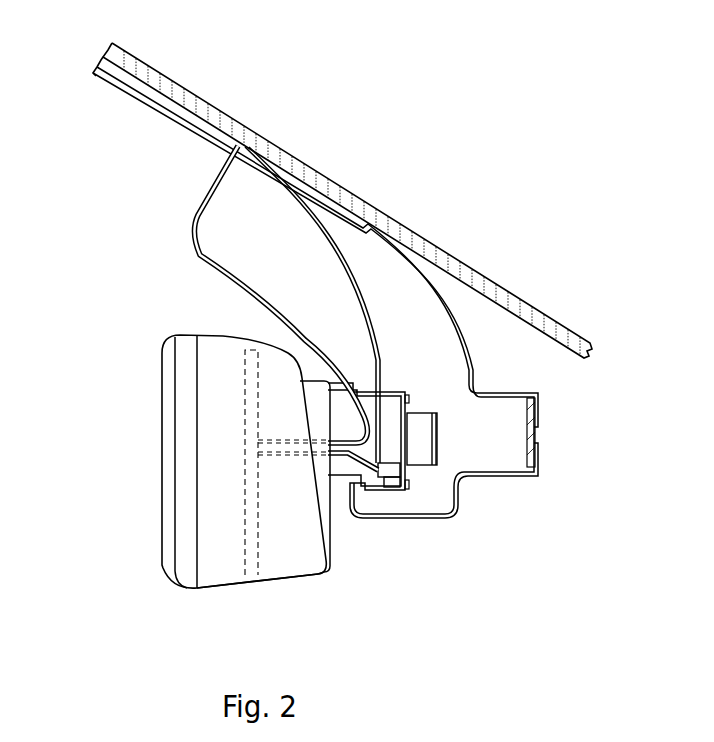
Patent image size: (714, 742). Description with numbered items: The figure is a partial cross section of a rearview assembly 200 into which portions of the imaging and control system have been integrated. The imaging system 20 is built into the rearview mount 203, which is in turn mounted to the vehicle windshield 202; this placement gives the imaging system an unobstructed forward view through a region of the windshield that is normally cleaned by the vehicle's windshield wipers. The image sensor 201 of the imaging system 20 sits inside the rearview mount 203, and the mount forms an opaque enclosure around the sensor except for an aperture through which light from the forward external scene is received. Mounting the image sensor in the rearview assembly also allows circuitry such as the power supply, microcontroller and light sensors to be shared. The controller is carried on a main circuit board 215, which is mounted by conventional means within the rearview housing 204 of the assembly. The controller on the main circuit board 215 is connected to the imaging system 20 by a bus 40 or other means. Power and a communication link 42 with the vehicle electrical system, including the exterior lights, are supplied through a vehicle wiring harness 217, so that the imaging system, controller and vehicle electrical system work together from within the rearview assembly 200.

The imaging system 20 is at (436, 486).
The bus 40 is at (352, 470).
The communication link 42 is at (362, 323).
The rearview assembly 200 is at (182, 606).
The image sensor 201 is at (381, 442).
The windshield 202 is at (437, 219).
The rearview mount 203 is at (219, 216).
The rearview housing 204 is at (150, 489).
The main circuit board 215 is at (262, 550).
The vehicle wiring harness 217 is at (348, 287).